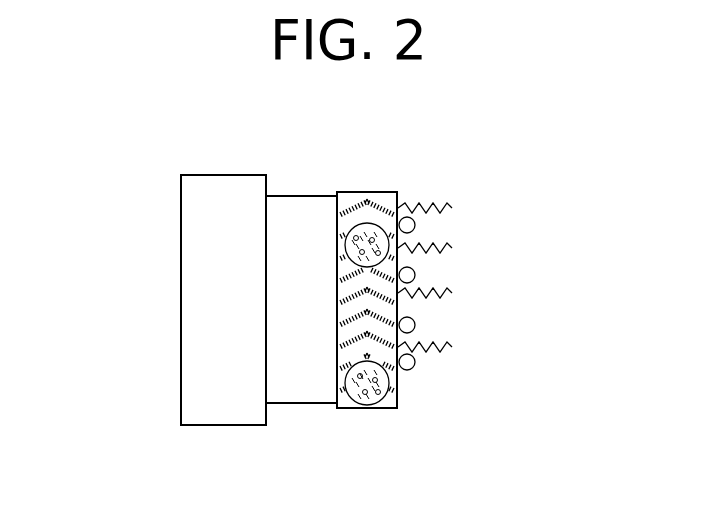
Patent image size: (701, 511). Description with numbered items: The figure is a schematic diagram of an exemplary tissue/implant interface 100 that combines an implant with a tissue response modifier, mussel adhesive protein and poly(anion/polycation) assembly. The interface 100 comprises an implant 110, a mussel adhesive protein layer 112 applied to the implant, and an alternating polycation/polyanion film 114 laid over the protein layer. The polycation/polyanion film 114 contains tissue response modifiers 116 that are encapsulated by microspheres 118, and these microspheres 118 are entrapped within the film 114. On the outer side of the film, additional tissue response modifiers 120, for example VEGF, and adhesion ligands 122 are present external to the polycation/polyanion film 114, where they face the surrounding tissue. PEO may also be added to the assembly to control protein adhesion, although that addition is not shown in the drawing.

The tissue/implant interface 100 is at (130, 296).
The implant 110 is at (223, 425).
The mussel adhesive protein layer 112 is at (298, 403).
The alternating polycation/polyanion film 114 is at (362, 408).
The tissue response modifiers 116 is at (345, 215).
The microspheres 118 is at (372, 224).
The tissue response modifiers 120 is at (415, 327).
The adhesion ligands 122 is at (427, 247).